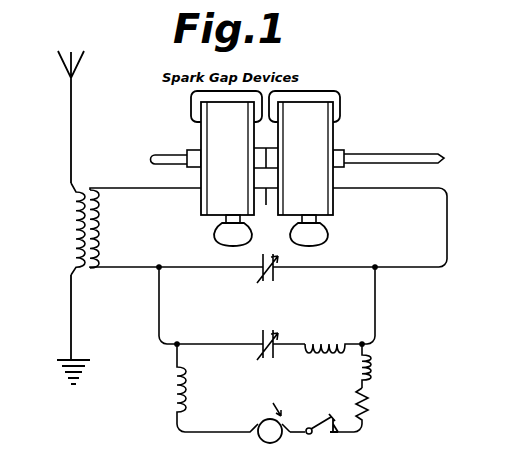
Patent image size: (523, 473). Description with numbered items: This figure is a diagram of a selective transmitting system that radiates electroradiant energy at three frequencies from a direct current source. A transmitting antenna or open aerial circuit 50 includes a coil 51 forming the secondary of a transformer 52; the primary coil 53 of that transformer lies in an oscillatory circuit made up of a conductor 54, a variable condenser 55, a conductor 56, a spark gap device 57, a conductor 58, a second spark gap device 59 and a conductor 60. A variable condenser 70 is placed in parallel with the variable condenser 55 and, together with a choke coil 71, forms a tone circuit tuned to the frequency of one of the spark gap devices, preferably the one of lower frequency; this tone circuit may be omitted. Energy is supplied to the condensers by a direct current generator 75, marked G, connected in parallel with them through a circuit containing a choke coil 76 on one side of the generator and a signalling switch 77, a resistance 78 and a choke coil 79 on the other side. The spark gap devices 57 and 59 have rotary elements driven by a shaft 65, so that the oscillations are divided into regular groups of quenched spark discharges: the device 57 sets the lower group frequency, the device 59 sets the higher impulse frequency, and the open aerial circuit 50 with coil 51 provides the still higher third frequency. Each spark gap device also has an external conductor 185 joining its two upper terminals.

The transmitting antenna or open aerial circuit 50 is at (68, 141).
The coil 51 is at (70, 228).
The transformer 52 is at (75, 277).
The primary coil 53 is at (98, 228).
The conductor 54 is at (176, 295).
The variable condenser 55 is at (256, 265).
The conductor 56 is at (448, 229).
The spark gap device 57 is at (311, 174).
The conductor 58 is at (266, 206).
The spark gap device 59 is at (202, 174).
The conductor 60 is at (264, 179).
The shaft 65 is at (383, 156).
The variable condenser 70 is at (262, 340).
The choke coil 71 is at (323, 342).
The direct current generator 75 is at (262, 441).
The choke coil 76 is at (172, 390).
The signalling switch 77 is at (323, 420).
The resistance 78 is at (369, 410).
The choke coil 79 is at (368, 367).
The conductor 185 is at (191, 99).